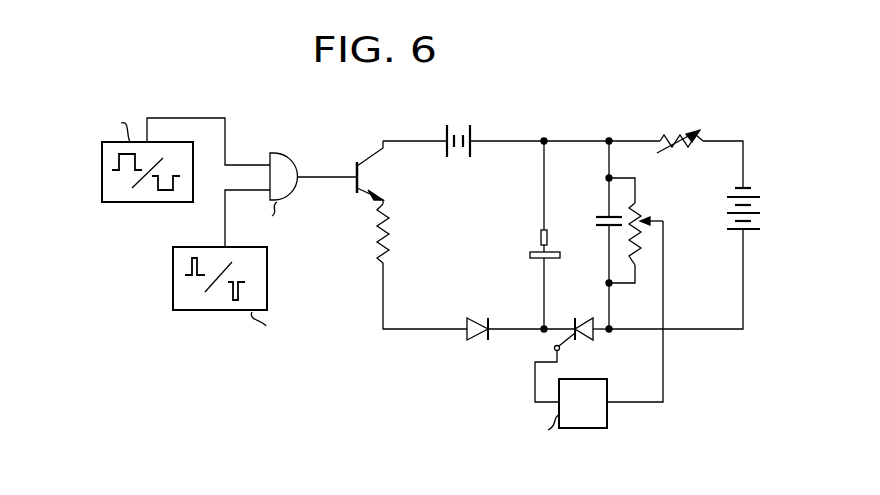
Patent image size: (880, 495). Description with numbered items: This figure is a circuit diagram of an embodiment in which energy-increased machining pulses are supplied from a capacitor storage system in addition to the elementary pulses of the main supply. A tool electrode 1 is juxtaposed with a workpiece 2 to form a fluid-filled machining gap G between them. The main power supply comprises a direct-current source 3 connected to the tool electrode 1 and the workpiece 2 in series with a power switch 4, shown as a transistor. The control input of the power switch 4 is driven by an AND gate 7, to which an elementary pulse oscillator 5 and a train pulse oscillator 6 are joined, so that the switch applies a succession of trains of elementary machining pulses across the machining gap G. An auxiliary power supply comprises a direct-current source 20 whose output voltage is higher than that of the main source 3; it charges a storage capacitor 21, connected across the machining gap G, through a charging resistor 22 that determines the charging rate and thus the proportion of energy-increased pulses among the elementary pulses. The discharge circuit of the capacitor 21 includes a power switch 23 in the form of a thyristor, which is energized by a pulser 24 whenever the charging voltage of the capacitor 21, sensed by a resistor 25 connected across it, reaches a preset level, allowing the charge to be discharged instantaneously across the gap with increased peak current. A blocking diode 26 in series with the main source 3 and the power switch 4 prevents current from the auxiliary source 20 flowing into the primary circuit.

The tool electrode 1 is at (548, 233).
The workpiece 2 is at (548, 258).
The machining gap G is at (538, 248).
The direct-current power source 3 is at (462, 124).
The power switch 4 is at (370, 182).
The elementary pulse oscillator 5 is at (230, 315).
The train pulse oscillator 6 is at (118, 204).
The AND gate 7 is at (292, 152).
The direct-current source 20 is at (755, 192).
The storage capacitor 21 is at (594, 216).
The charging resistor 22 is at (690, 128).
The power switch 23 is at (592, 341).
The pulser 24 is at (607, 418).
The resistor 25 is at (645, 212).
The blocking diode 26 is at (463, 340).